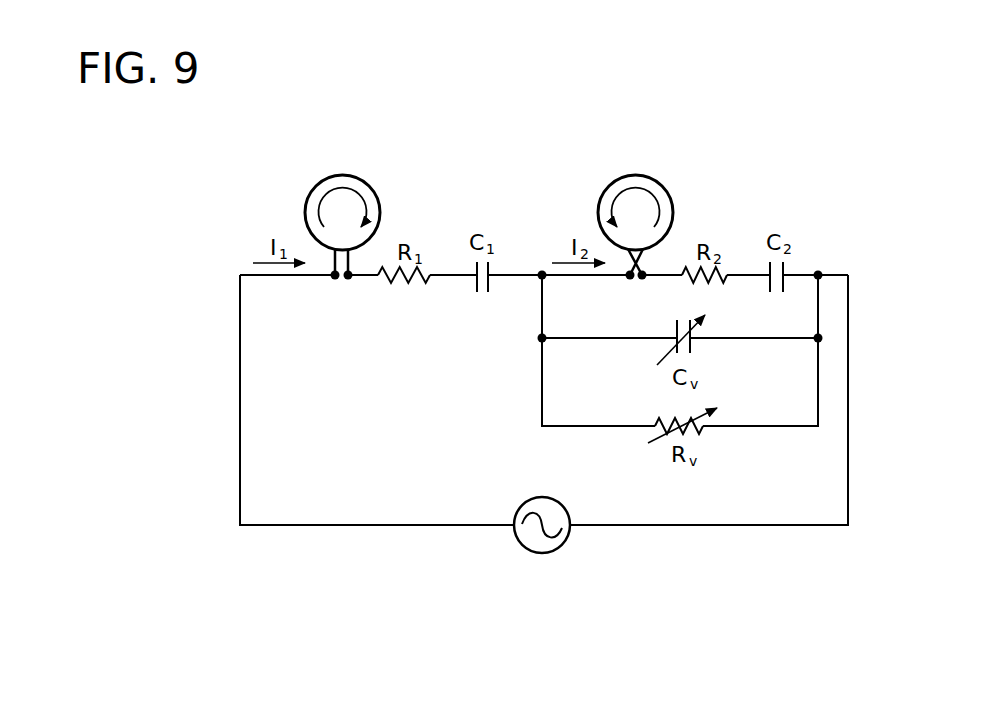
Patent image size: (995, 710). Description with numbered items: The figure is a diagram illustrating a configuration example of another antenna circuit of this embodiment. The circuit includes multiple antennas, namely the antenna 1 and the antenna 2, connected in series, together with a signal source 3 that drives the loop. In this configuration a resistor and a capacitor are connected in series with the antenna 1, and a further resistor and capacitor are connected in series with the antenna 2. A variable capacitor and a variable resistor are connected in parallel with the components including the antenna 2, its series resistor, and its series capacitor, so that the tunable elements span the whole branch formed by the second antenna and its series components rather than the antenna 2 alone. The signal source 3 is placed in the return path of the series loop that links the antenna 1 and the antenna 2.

The antenna 1 is at (345, 175).
The antenna 2 is at (638, 175).
The signal source 3 is at (542, 553).